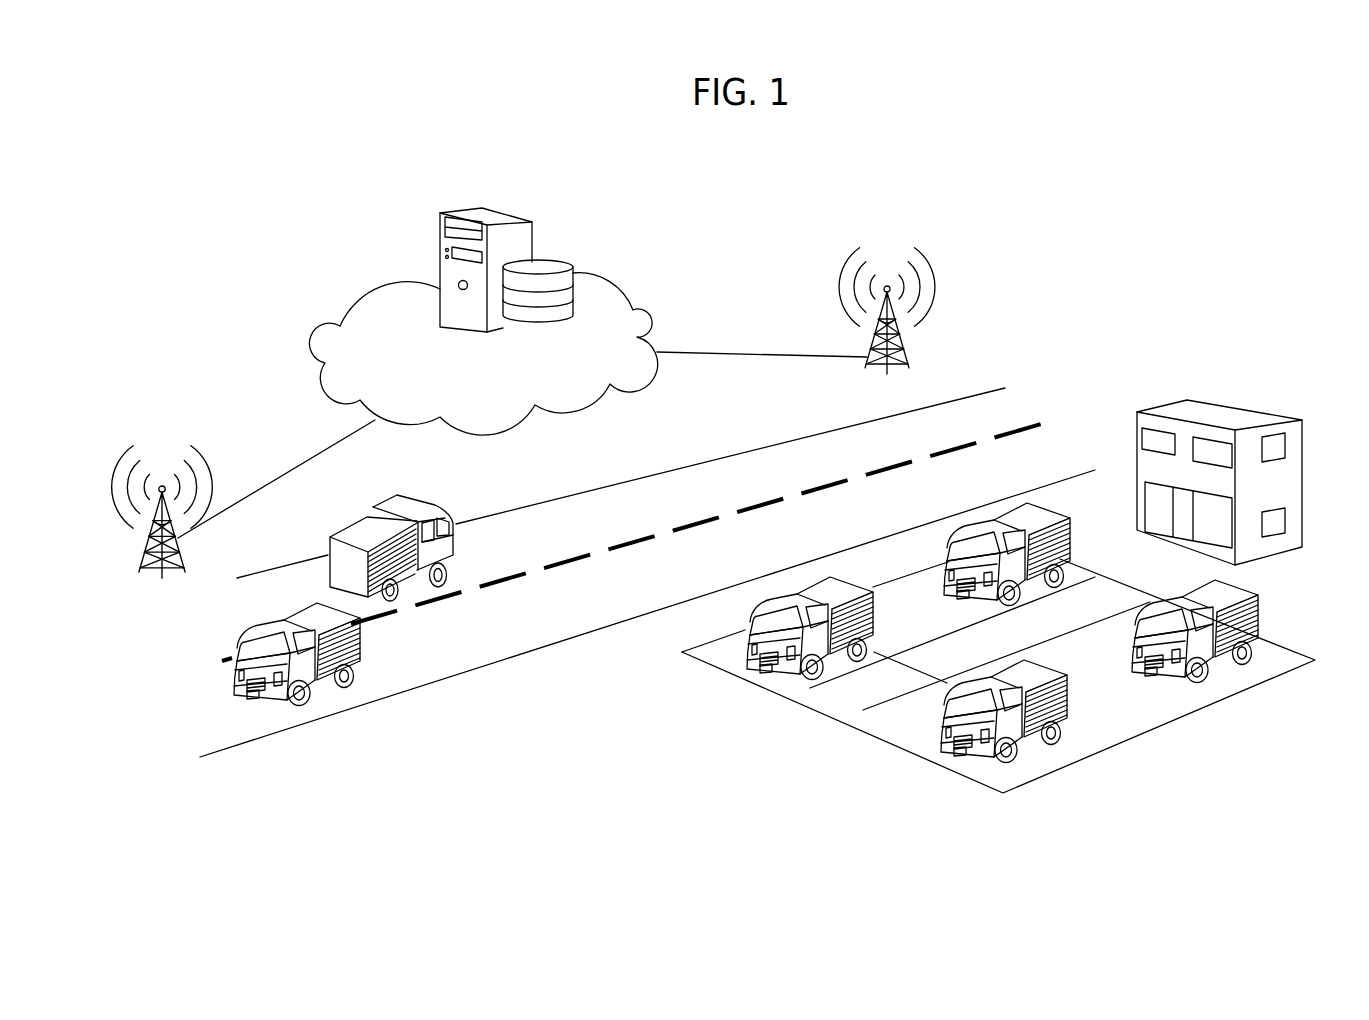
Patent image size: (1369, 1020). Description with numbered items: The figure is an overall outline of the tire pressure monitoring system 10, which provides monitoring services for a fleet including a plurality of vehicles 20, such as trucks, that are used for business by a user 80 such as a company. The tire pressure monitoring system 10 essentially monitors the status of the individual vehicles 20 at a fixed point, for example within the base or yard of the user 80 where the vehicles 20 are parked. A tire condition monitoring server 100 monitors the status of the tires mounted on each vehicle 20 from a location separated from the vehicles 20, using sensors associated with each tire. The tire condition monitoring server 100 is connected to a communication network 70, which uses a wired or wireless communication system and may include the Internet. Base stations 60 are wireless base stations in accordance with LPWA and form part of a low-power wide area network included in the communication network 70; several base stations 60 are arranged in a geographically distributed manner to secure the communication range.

The tire pressure monitoring system 10 is at (772, 196).
The vehicle 20 is at (358, 522).
The base station 60 is at (910, 352).
The communication network 70 is at (633, 311).
The user 80 is at (1234, 410).
The tire condition monitoring server 100 is at (520, 240).